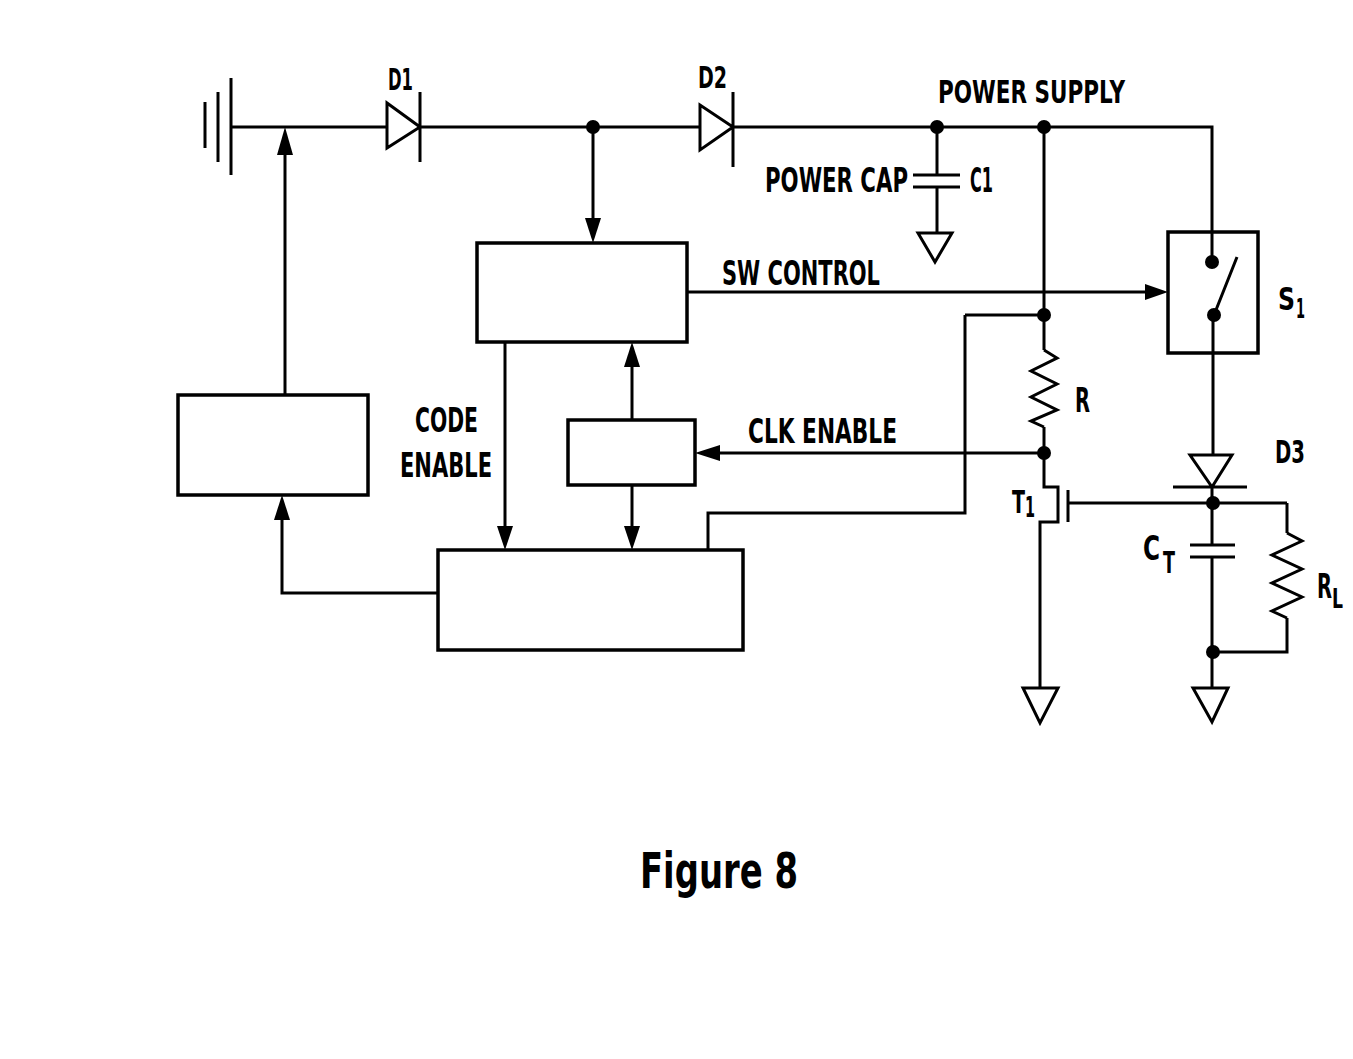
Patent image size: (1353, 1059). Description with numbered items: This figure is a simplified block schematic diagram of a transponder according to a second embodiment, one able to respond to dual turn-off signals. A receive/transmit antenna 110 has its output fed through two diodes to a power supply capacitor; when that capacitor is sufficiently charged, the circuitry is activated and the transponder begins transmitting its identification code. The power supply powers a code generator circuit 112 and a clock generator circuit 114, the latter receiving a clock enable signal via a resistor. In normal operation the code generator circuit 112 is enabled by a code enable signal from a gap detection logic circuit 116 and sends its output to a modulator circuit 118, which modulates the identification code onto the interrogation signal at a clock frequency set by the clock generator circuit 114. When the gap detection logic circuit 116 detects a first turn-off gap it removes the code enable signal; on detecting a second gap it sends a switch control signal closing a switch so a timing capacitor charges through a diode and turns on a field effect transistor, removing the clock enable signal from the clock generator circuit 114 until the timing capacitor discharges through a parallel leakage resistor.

The receive/transmit antenna 110 is at (180, 146).
The code generator circuit 112 is at (557, 630).
The clock generator circuit 114 is at (657, 417).
The gap detection logic circuit 116 is at (478, 293).
The modulator circuit 118 is at (178, 422).